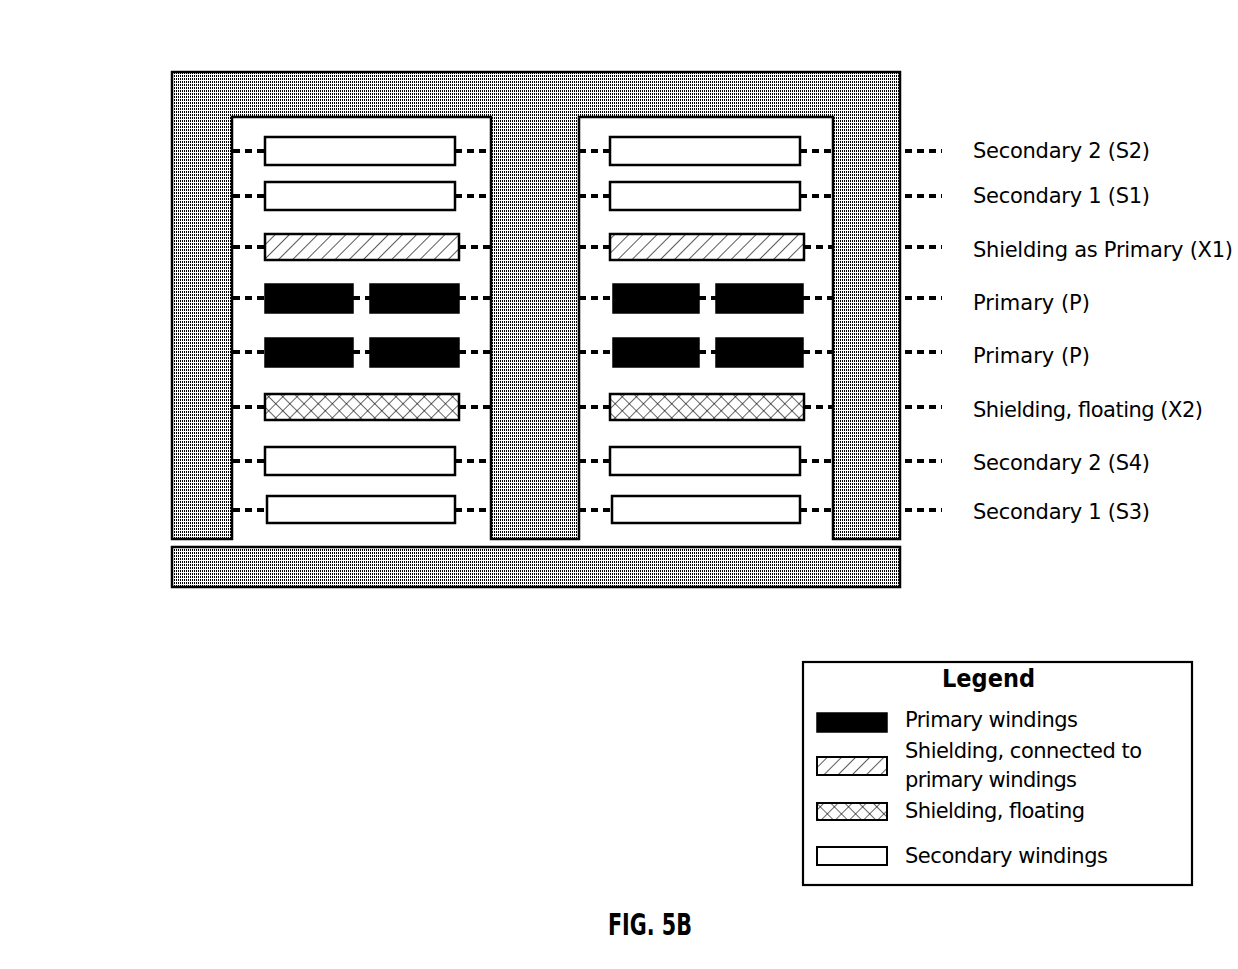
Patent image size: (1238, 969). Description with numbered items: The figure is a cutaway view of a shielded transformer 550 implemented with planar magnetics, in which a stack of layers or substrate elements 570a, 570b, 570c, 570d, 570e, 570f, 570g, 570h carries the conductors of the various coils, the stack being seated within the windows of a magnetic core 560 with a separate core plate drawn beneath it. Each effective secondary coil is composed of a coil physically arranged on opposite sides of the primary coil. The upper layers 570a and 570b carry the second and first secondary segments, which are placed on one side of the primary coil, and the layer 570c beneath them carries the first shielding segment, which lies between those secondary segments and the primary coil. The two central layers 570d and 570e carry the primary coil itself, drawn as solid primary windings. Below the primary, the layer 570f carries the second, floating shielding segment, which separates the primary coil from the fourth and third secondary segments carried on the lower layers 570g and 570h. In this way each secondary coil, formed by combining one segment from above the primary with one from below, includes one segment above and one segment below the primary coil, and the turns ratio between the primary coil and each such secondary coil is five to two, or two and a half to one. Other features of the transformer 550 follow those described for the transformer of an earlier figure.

The transformer 550 is at (122, 60).
The magnetic core 560 is at (325, 88).
The layer or substrate element 570a is at (155, 151).
The layer or substrate element 570b is at (155, 205).
The layer or substrate element 570c is at (155, 259).
The layer or substrate element 570d is at (155, 313).
The layer or substrate element 570e is at (155, 367).
The layer or substrate element 570f is at (155, 423).
The layer or substrate element 570g is at (155, 468).
The layer or substrate element 570h is at (155, 520).